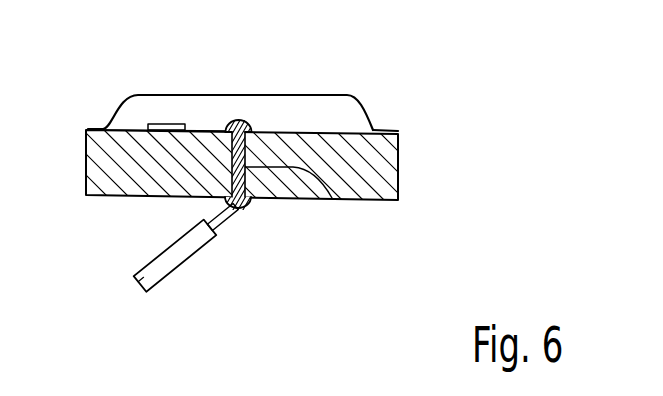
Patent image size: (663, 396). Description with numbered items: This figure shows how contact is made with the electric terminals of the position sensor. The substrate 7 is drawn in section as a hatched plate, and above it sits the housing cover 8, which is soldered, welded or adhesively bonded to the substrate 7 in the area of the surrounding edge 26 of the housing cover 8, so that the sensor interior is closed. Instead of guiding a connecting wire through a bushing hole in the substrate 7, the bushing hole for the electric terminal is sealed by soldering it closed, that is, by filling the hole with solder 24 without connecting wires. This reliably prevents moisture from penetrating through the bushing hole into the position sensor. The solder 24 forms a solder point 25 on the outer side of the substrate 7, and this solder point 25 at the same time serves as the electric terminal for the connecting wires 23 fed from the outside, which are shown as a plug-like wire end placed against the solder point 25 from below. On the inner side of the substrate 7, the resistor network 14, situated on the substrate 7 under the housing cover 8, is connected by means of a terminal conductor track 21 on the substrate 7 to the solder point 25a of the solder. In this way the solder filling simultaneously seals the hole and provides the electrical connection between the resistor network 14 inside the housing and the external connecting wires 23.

The substrate 7 is at (370, 168).
The housing cover 8 is at (315, 107).
The resistor network 14 is at (157, 124).
The terminal conductor track 21 is at (205, 128).
The connecting wires 23 is at (137, 283).
The solder 24 is at (332, 198).
The solder point 25 is at (248, 206).
The solder point 25a is at (240, 130).
The surrounding edge 26 is at (97, 128).